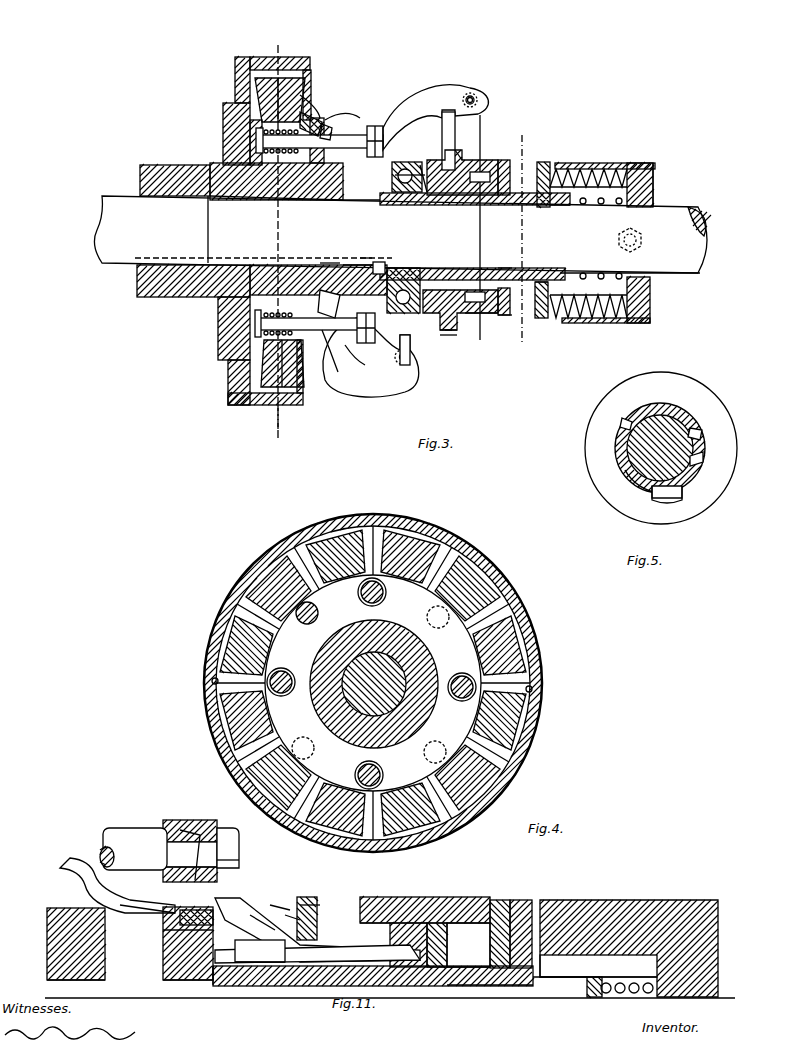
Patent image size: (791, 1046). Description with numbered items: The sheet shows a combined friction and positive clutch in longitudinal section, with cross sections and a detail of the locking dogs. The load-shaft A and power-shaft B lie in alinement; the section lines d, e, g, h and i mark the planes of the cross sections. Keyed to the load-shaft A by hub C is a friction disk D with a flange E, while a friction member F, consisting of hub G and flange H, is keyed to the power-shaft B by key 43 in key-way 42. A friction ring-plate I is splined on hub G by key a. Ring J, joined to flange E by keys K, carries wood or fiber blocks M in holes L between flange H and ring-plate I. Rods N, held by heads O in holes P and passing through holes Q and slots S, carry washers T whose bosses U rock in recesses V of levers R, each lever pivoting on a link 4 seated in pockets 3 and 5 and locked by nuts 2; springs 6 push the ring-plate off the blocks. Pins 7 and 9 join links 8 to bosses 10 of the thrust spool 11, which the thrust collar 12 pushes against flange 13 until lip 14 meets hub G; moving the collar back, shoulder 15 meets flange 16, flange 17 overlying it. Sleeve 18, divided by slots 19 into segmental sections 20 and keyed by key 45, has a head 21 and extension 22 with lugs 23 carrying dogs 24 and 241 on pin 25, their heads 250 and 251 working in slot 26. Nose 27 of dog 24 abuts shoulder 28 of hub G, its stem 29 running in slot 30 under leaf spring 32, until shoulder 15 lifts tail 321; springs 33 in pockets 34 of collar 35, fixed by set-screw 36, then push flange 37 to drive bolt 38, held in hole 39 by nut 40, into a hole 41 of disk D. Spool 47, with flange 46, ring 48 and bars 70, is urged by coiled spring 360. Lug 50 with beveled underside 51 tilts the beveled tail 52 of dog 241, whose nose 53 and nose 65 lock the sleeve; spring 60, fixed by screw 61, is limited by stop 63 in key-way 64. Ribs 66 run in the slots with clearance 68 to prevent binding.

In FIG. 3, the load-shaft A is at (400, 234).
In FIG. 3, the power-shaft B is at (660, 275).
In FIG. 5, the power-shaft B is at (625, 452).
In FIG. 3, the hub C is at (165, 170).
In FIG. 3, the friction disk D is at (226, 105).
In FIG. 3, the flange E is at (258, 58).
In FIG. 4, the flange E is at (530, 620).
In FIG. 3, the friction member F is at (270, 198).
In FIG. 3, the hub G is at (322, 200).
In FIG. 11, the hub G is at (60, 947).
In FIG. 3, the flange H is at (230, 382).
In FIG. 3, the friction ring-plate I is at (300, 393).
In FIG. 3, the ring J is at (285, 400).
In FIG. 4, the ring J is at (530, 645).
In FIG. 4, the keys K is at (212, 680).
In FIG. 4, the holes L is at (520, 582).
In FIG. 3, the blocks M is at (248, 402).
In FIG. 4, the blocks M is at (540, 700).
In FIG. 3, the rods N is at (258, 322).
In FIG. 4, the rods N is at (360, 768).
In FIG. 3, the heads O is at (255, 130).
In FIG. 3, the holes P is at (256, 142).
In FIG. 3, the holes Q is at (222, 355).
In FIG. 3, the levers R is at (372, 92).
In FIG. 3, the slots S is at (350, 122).
In FIG. 3, the washer T is at (440, 112).
In FIG. 3, the bosses U is at (365, 365).
In FIG. 3, the recess V is at (338, 372).
In FIG. 3, the key a is at (340, 300).
In FIG. 3, the section line d is at (276, 235).
In FIG. 3, the section line e is at (273, 426).
In FIG. 3, the section line g is at (518, 240).
In FIG. 3, the section line h is at (480, 220).
In FIG. 3, the section line i is at (470, 315).
In FIG. 3, the nuts 2 is at (410, 170).
In FIG. 3, the pocket 3 is at (345, 116).
In FIG. 3, the link 4 is at (312, 118).
In FIG. 3, the pocket 5 is at (308, 112).
In FIG. 4, the spring 6 is at (290, 670).
In FIG. 3, the pins 7 is at (460, 105).
In FIG. 3, the links 8 is at (412, 175).
In FIG. 3, the pins 9 is at (420, 165).
In FIG. 3, the bosses 10 is at (427, 165).
In FIG. 3, the thrust spool 11 is at (462, 150).
In FIG. 11, the thrust spool 11 is at (225, 985).
In FIG. 3, the thrust collar 12 is at (447, 330).
In FIG. 11, the thrust collar 12 is at (392, 900).
In FIG. 3, the flange 13 is at (448, 330).
In FIG. 11, the flange 13 is at (350, 945).
In FIG. 3, the lip 14 is at (370, 238).
In FIG. 3, the internal annular shoulder 15 is at (478, 313).
In FIG. 3, the annular flange 16 is at (488, 313).
In FIG. 11, the annular flange 16 is at (450, 897).
In FIG. 3, the flange 17 is at (507, 316).
In FIG. 11, the flange 17 is at (478, 897).
In FIG. 3, the sleeve 18 is at (460, 205).
In FIG. 5, the sleeve 18 is at (625, 465).
In FIG. 11, the sleeve 18 is at (470, 985).
In FIG. 5, the slots 19 is at (628, 425).
In FIG. 5, the segmental sections 20 is at (663, 498).
In FIG. 3, the head 21 is at (372, 200).
In FIG. 11, the extension 22 is at (200, 975).
In FIG. 11, the lugs 23 is at (165, 955).
In FIG. 11, the dog 24 is at (235, 960).
In FIG. 11, the pin 25 is at (235, 900).
In FIG. 11, the slot 26 is at (190, 830).
In FIG. 11, the nose 27 is at (100, 880).
In FIG. 11, the annular shoulder 28 is at (55, 930).
In FIG. 11, the stem 29 is at (320, 990).
In FIG. 11, the longitudinal slot 30 is at (360, 900).
In FIG. 11, the leaf spring 32 is at (270, 985).
In FIG. 3, the springs 33 is at (580, 163).
In FIG. 3, the pockets 34 is at (630, 165).
In FIG. 3, the collar 35 is at (653, 205).
In FIG. 3, the set-screw 36 is at (646, 243).
In FIG. 11, the set-screw 36 is at (590, 915).
In FIG. 3, the flange 37 is at (543, 162).
In FIG. 11, the flange 37 is at (528, 895).
In FIG. 4, the bolt 38 is at (306, 625).
In FIG. 11, the bolt 38 is at (133, 849).
In FIG. 11, the hole 39 is at (165, 825).
In FIG. 11, the nut 40 is at (238, 845).
In FIG. 4, the holes 41 is at (435, 745).
In FIG. 3, the key-way 42 is at (350, 266).
In FIG. 3, the key 43 is at (328, 262).
In FIG. 3, the key 45 is at (385, 266).
In FIG. 3, the flange 46 is at (503, 160).
In FIG. 5, the flange 46 is at (642, 415).
In FIG. 11, the flange 46 is at (500, 900).
In FIG. 3, the spool 47 is at (510, 268).
In FIG. 5, the spool 47 is at (660, 441).
In FIG. 3, the ring 48 is at (568, 205).
In FIG. 11, the ring 48 is at (594, 992).
In FIG. 11, the lug 50 is at (320, 908).
In FIG. 11, the beveled underside 51 is at (298, 915).
In FIG. 11, the beveled tail 52 is at (265, 915).
In FIG. 11, the nose 53 is at (120, 905).
In FIG. 11, the spring 60 is at (222, 832).
In FIG. 11, the screw 61 is at (240, 860).
In FIG. 11, the stop 63 is at (178, 920).
In FIG. 11, the key-way 64 is at (165, 940).
In FIG. 11, the nose 65 is at (285, 905).
In FIG. 3, the ribs 66 is at (452, 330).
In FIG. 3, the clearance 68 is at (445, 195).
In FIG. 11, the clearance 68 is at (435, 985).
In FIG. 3, the bars 70 is at (535, 282).
In FIG. 5, the bars 70 is at (698, 458).
In FIG. 11, the bars 70 is at (562, 985).
In FIG. 11, the dog 241 is at (240, 965).
In FIG. 11, the head 250 is at (100, 862).
In FIG. 11, the head 251 is at (100, 855).
In FIG. 11, the tail 321 is at (428, 900).
In FIG. 3, the coiled spring 360 is at (600, 205).
In FIG. 11, the coiled spring 360 is at (645, 980).